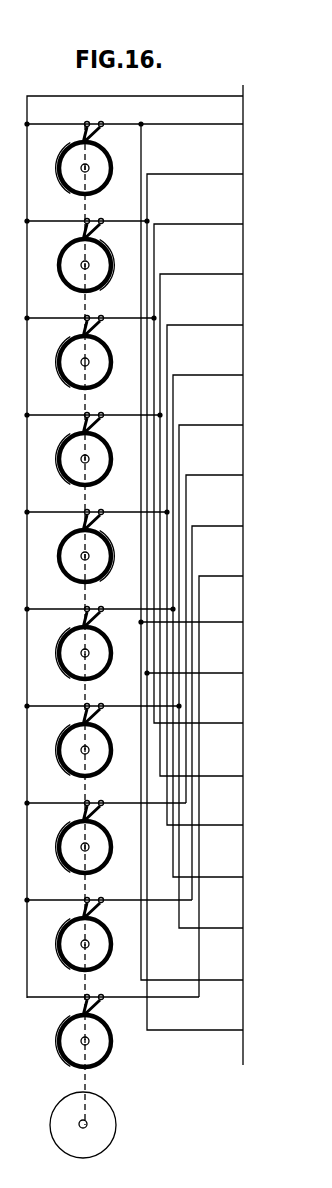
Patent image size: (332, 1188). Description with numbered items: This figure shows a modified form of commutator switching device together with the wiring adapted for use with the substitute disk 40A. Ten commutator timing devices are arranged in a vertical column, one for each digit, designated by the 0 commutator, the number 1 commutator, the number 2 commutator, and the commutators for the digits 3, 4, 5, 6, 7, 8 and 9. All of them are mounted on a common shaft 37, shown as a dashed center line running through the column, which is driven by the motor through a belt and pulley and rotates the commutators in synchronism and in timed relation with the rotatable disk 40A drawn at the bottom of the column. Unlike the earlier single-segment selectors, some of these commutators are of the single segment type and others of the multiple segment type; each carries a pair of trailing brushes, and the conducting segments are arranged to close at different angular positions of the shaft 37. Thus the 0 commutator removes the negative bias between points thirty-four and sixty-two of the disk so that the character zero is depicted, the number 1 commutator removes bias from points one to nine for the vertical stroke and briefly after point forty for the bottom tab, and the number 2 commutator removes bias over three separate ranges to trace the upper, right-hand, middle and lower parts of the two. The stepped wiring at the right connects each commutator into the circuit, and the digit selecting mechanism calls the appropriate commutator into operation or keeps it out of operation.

The 0 commutator 0 is at (91, 158).
The number 1 commutator 1 is at (93, 255).
The number 2 commutator 2 is at (91, 352).
The commutator for digit 3 is at (91, 449).
The commutator for digit 4 is at (93, 546).
The commutator for digit 5 is at (91, 643).
The commutator for digit 6 is at (91, 740).
The commutator for digit 7 is at (91, 837).
The commutator for digit 8 is at (91, 934).
The commutator for digit 9 is at (91, 1031).
The shaft 37 is at (89, 658).
The substitute disk 40A is at (117, 1120).